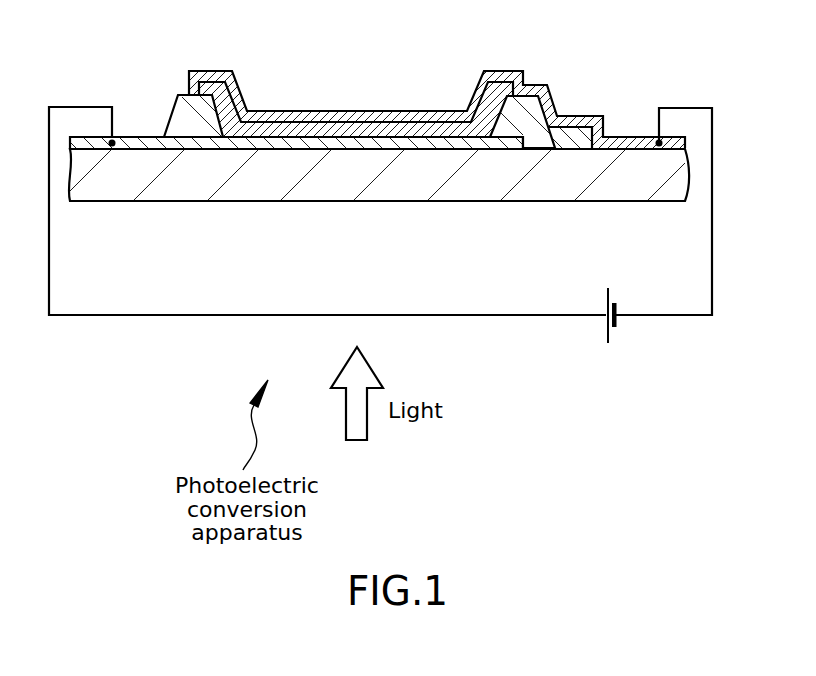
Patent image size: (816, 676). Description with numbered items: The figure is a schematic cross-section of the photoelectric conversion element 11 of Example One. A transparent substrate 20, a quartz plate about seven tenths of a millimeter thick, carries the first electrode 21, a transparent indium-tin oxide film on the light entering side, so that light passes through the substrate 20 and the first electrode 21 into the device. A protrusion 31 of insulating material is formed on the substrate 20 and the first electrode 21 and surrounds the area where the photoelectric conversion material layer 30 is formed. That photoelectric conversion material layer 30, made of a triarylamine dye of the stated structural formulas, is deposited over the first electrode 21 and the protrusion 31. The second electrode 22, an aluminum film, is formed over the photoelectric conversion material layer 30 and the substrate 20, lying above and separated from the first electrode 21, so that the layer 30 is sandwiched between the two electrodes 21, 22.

The photoelectric conversion element 11 is at (583, 54).
The substrate 20 is at (485, 183).
The first electrode 21 is at (263, 140).
The second electrode 22 is at (428, 112).
The photoelectric conversion material layer 30 is at (307, 115).
The protrusion 31 is at (187, 117).